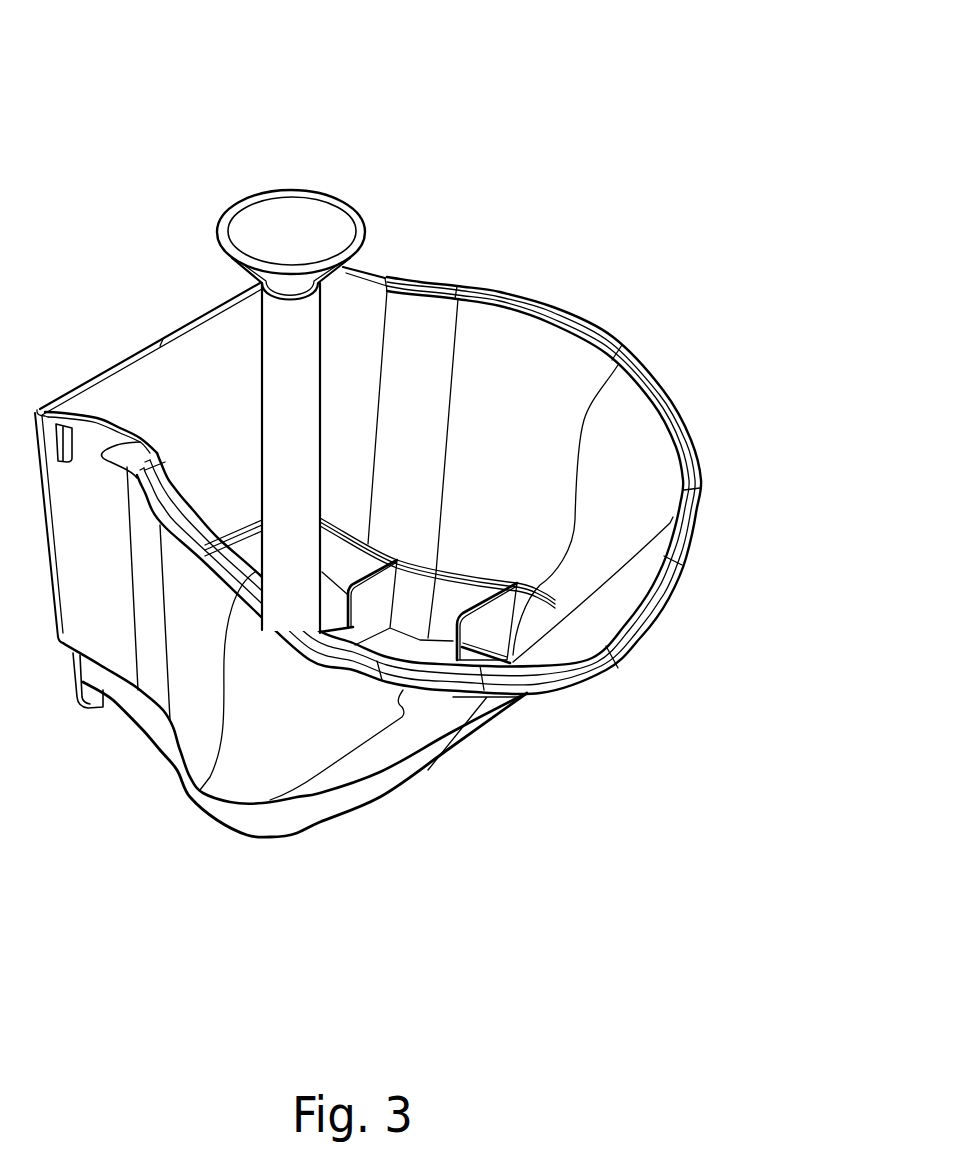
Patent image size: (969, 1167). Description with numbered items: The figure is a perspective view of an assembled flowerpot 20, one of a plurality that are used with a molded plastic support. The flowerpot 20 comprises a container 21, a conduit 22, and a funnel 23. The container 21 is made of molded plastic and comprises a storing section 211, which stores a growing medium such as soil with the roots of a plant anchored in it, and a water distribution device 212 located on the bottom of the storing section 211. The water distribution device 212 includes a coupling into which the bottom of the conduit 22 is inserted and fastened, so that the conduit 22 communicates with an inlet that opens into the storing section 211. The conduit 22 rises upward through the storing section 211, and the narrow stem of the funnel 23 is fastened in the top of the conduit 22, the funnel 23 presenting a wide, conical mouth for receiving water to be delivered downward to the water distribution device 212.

The flowerpot 20 is at (384, 450).
The container 21 is at (608, 337).
The storing section 211 is at (630, 470).
The water distribution device 212 is at (405, 634).
The conduit 22 is at (278, 362).
The funnel 23 is at (345, 205).